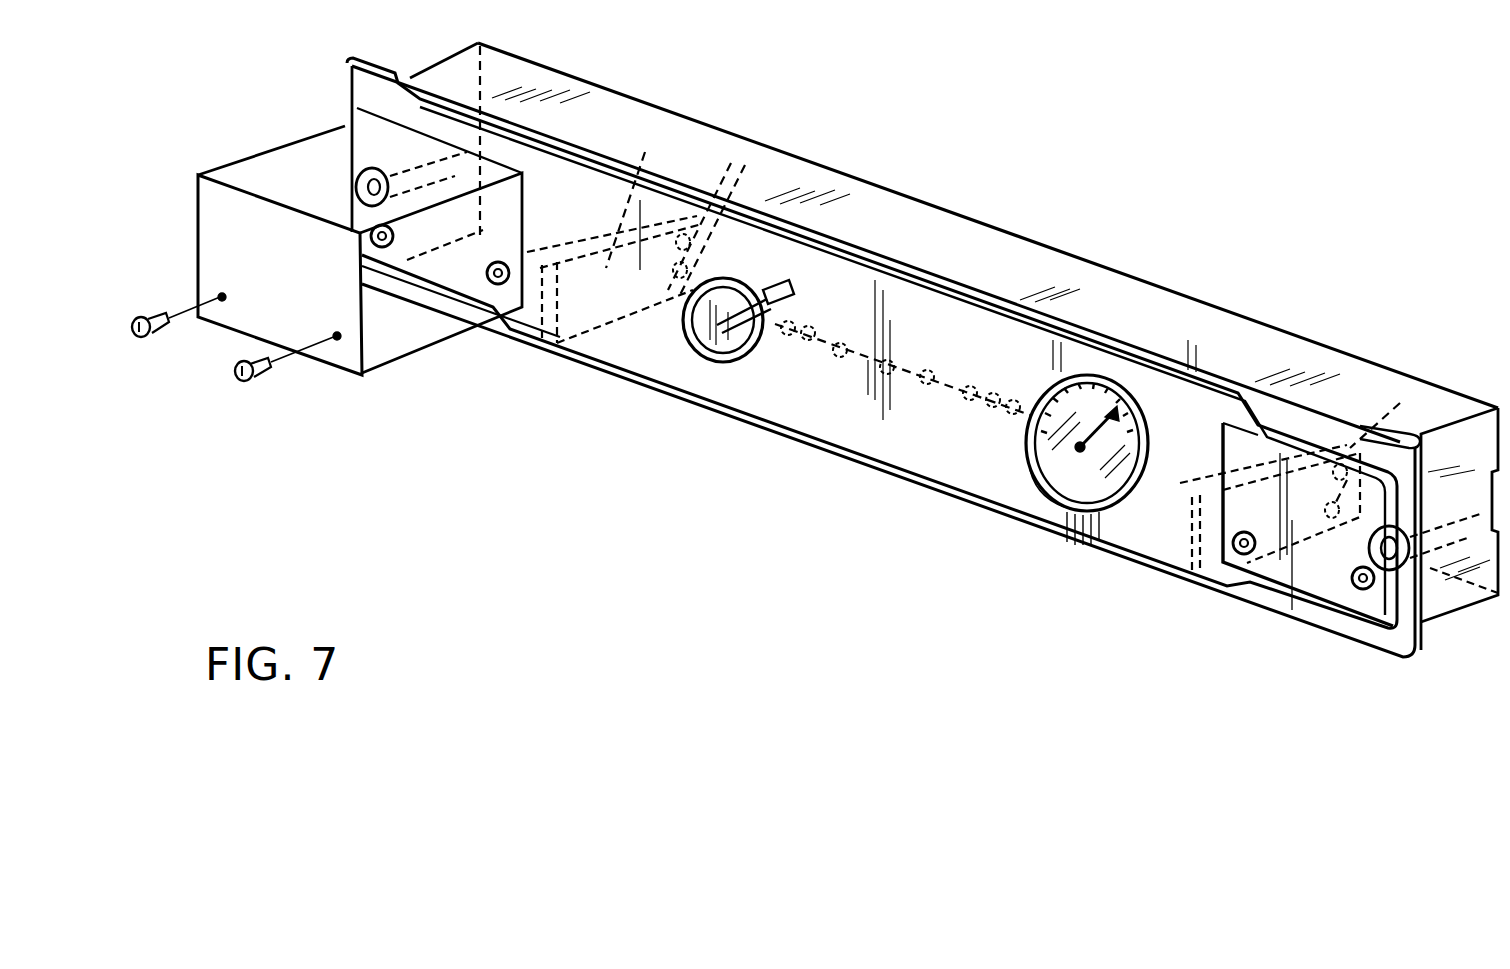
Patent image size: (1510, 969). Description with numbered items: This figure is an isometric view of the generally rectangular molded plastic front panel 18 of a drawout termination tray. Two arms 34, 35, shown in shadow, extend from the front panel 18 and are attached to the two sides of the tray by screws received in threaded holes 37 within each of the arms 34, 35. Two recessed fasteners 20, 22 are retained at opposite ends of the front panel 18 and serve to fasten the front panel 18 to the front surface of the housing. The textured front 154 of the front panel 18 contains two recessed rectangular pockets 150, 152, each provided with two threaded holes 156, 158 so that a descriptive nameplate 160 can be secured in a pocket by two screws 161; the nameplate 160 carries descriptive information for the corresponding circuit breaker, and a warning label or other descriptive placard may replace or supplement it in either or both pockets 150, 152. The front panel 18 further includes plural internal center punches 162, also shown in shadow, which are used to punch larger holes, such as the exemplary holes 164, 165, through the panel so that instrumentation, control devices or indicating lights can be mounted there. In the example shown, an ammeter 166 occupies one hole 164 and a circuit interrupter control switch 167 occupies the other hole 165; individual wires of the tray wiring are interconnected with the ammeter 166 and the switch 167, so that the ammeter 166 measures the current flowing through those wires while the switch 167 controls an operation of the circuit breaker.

The front panel 18 is at (898, 565).
The recessed fastener 20 is at (356, 190).
The recessed fastener 22 is at (1366, 550).
The arm 34 is at (642, 201).
The arm 35 is at (1213, 513).
The threaded hole 37 is at (1054, 332).
The recessed rectangular pocket 150 is at (507, 193).
The recessed rectangular pocket 152 is at (1262, 455).
The textured front 154 is at (833, 427).
The threaded hole 156 is at (393, 235).
The threaded hole 158 is at (500, 263).
The descriptive nameplate 160 is at (231, 210).
The screw 161 is at (141, 338).
The internal center punch 162 is at (788, 320).
The hole 164 is at (1030, 456).
The hole 165 is at (723, 362).
The ammeter 166 is at (1053, 486).
The circuit interrupter control switch 167 is at (743, 360).